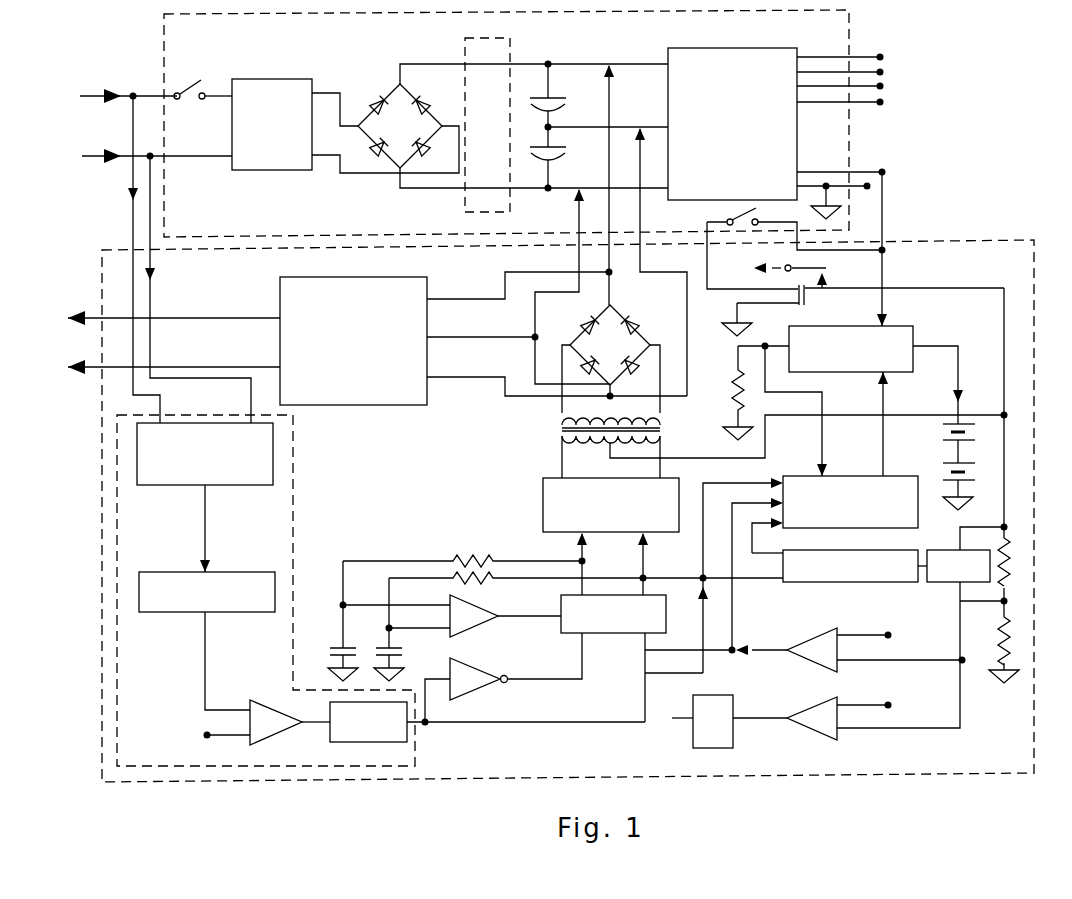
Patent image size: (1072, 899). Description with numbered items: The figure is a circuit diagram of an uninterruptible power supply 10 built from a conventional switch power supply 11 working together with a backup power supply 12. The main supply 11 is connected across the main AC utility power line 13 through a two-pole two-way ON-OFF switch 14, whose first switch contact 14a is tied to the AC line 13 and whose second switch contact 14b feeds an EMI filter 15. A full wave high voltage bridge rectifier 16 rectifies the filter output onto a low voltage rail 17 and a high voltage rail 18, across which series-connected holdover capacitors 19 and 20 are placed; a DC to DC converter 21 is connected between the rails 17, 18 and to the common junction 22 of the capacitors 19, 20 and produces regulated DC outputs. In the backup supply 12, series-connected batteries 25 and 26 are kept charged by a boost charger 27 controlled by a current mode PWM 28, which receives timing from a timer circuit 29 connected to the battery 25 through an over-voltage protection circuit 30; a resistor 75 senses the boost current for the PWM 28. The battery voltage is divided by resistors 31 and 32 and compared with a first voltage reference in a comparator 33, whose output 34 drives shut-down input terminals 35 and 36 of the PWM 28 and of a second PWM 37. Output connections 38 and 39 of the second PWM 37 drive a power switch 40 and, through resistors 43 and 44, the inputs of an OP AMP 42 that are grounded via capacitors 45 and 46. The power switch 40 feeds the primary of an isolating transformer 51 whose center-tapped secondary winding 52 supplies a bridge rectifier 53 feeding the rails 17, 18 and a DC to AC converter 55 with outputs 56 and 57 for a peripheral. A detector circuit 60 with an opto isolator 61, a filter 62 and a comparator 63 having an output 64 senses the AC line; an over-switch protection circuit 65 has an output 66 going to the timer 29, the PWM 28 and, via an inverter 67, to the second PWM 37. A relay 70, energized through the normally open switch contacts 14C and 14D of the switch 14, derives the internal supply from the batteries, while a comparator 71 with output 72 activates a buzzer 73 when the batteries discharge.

The uninterruptible power supply 10 is at (458, 785).
The switch power supply 11 is at (207, 43).
The backup power supply 12 is at (907, 239).
The main AC utility power line 13 is at (93, 93).
The 2-pole 2-way ON-OFF switch 14 is at (183, 87).
The first switch contact 14a is at (179, 107).
The second switch contact 14b is at (215, 107).
The normally open switch contact 14C is at (728, 210).
The normally open switch contact 14D is at (742, 231).
The EMI filter 15 is at (269, 79).
The full wave high voltage bridge rectifier 16 is at (391, 92).
The low voltage rail 17 is at (423, 190).
The high voltage rail 18 is at (426, 63).
The holdover capacitor 19 is at (540, 151).
The holdover capacitor 20 is at (553, 100).
The DC to DC converter 21 is at (718, 47).
The common junction 22 is at (553, 131).
The battery 25 is at (947, 440).
The battery 26 is at (950, 466).
The boost charger 27 is at (898, 327).
The current mode PWM 28 is at (857, 476).
The timer circuit 29 is at (857, 583).
The over-voltage protection circuit 30 is at (953, 583).
The resistor 31 is at (1028, 573).
The resistor 32 is at (1029, 650).
The comparator 33 is at (816, 638).
The comparator output 34 is at (775, 645).
The shut-down input terminal 35 is at (784, 500).
The shut-down input terminal 36 is at (643, 634).
The second PWM 37 is at (560, 619).
The output connection 38 is at (586, 571).
The output connection 39 is at (646, 567).
The power switch 40 is at (543, 505).
The OP AMP 42 is at (478, 630).
The resistor 43 is at (473, 551).
The resistor 44 is at (482, 581).
The capacitor 45 is at (338, 644).
The capacitor 46 is at (398, 649).
The isolating transformer 51 is at (545, 435).
The center-tapped secondary winding 52 is at (580, 418).
The bridge rectifier 53 is at (620, 306).
The DC to AC converter 55 is at (353, 407).
The output 56 is at (195, 366).
The output 57 is at (203, 316).
The detector circuit 60 is at (115, 505).
The opto isolator 61 is at (242, 485).
The filter 62 is at (162, 613).
The comparator 63 is at (271, 706).
The comparator output 64 is at (311, 728).
The over-switch protection circuit 65 is at (330, 710).
The OSP output 66 is at (477, 725).
The inverter 67 is at (478, 690).
The relay 70 is at (805, 294).
The comparator 71 is at (806, 734).
The comparator output 72 is at (765, 724).
The buzzer 73 is at (702, 732).
The resistor 75 is at (737, 382).